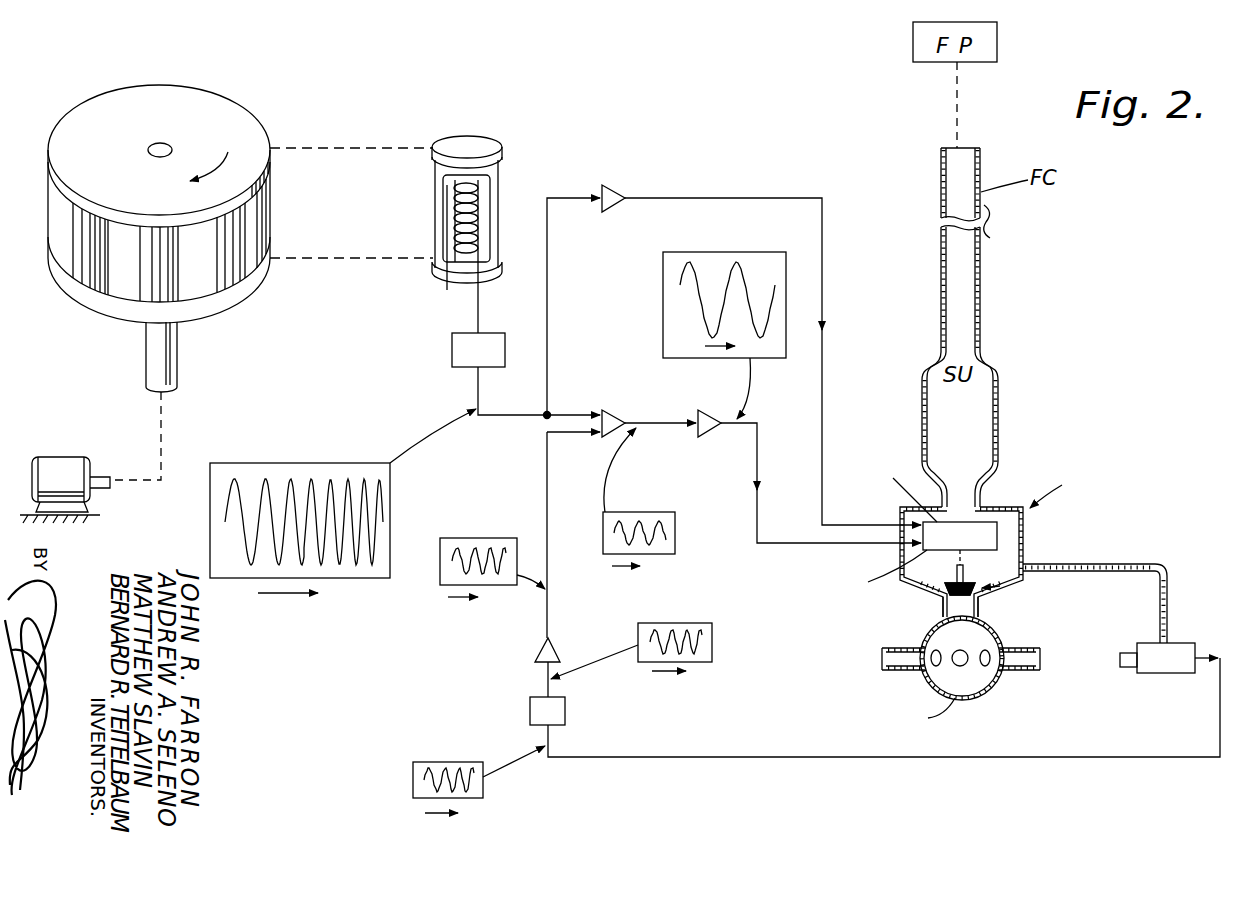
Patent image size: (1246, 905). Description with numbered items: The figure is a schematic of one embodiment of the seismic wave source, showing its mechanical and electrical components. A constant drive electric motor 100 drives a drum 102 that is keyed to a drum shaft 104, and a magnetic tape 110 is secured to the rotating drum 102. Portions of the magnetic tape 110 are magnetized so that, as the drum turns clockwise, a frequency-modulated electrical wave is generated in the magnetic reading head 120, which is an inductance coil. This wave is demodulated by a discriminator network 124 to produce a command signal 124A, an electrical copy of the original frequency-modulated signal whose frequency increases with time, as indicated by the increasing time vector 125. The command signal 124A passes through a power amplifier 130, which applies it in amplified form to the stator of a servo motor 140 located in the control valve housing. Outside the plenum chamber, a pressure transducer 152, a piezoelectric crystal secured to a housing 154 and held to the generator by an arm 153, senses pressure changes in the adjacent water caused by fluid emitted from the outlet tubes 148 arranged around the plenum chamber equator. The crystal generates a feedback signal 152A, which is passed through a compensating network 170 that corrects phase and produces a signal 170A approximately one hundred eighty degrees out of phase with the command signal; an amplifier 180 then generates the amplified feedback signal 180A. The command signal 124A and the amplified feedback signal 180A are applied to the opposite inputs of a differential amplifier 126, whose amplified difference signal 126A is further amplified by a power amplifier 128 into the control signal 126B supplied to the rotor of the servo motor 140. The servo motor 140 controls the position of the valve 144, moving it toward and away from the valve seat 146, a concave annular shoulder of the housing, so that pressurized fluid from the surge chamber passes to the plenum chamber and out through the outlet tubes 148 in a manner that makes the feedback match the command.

The constant drive electric motor 100 is at (74, 422).
The drum 102 is at (149, 87).
The drum shaft 104 is at (178, 364).
The magnetic tape 110 is at (258, 228).
The magnetic reading head 120 is at (468, 131).
The discriminator network 124 is at (452, 352).
The command signal 124A is at (243, 565).
The increasing time vector 125 is at (280, 593).
The differential amplifier 126 is at (614, 408).
The amplified difference signal 126A is at (675, 545).
The amplified difference signal 126B is at (694, 252).
The power amplifier 128 is at (709, 438).
The power amplifier 130 is at (611, 183).
The servo motor 140 is at (985, 534).
The valve 144 is at (998, 592).
The valve seat 146 is at (941, 608).
The outlet tubes 148 is at (1020, 670).
The pressure transducer 152 is at (1125, 667).
The feedback signal 152A is at (413, 782).
The arm 153 is at (1155, 565).
The housing 154 is at (1180, 645).
The compensating network 170 is at (530, 710).
The compensated signal 170A is at (712, 650).
The amplifier 180 is at (534, 651).
The amplified feedback signal 180A is at (498, 538).